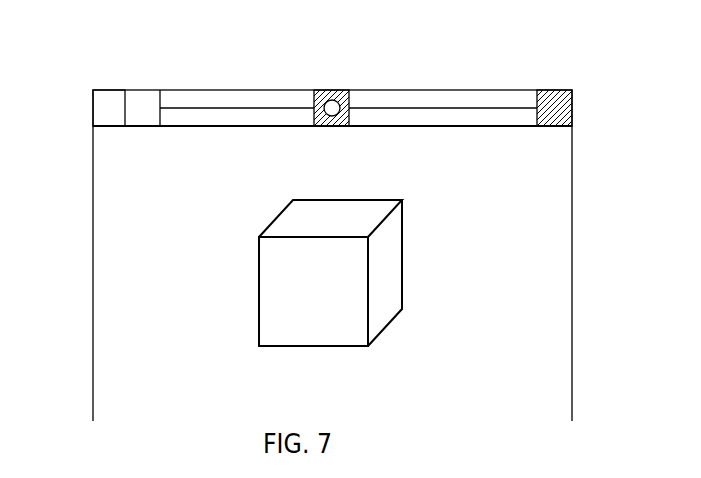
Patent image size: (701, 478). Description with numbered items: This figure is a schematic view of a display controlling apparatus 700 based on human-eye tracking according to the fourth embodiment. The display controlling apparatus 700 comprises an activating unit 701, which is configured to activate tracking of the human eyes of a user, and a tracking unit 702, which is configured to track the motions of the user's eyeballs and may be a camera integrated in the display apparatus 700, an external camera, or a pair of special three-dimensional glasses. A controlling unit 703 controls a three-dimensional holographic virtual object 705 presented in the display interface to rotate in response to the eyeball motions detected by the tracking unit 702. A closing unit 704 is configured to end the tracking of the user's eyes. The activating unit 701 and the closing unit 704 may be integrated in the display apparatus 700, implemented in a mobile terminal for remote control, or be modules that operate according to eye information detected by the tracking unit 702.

The display controlling apparatus 700 is at (7, 52).
The activating unit 701 is at (142, 108).
The tracking unit 702 is at (332, 88).
The controlling unit 703 is at (553, 108).
The closing unit 704 is at (108, 108).
The 3D holographic virtual object 705 is at (383, 262).